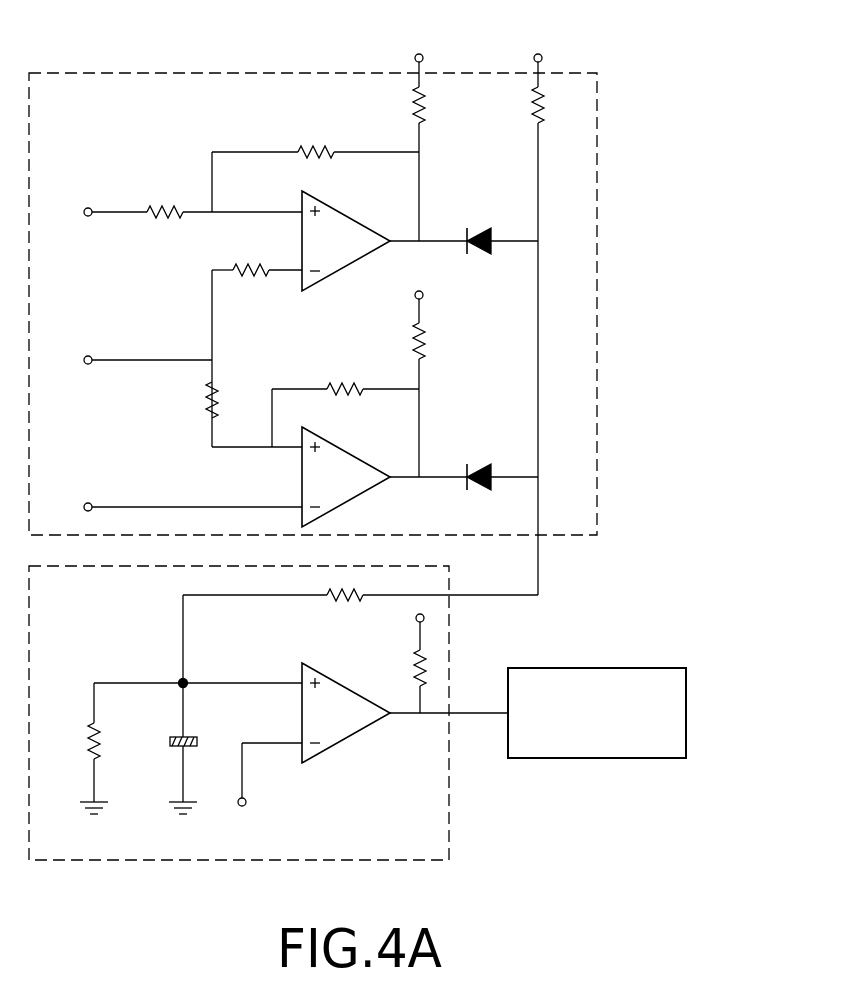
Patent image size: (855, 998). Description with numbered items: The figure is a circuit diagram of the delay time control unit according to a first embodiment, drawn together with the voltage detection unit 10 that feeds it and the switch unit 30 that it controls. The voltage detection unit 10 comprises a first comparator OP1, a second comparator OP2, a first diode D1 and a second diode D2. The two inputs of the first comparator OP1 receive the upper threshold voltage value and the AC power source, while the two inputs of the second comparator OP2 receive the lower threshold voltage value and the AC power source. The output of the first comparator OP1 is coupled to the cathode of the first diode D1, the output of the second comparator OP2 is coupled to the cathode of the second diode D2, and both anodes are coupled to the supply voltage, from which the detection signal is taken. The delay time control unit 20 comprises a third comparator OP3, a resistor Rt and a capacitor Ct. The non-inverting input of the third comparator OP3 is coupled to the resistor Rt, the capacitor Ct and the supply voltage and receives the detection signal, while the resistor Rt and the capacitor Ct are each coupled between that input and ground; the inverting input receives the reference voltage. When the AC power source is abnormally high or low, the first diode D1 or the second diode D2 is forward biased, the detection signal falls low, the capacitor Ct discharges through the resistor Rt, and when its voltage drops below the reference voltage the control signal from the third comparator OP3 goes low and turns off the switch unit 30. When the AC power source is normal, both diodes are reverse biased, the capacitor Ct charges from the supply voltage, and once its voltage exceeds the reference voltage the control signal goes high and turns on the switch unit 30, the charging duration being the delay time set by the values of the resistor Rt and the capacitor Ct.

The voltage detection unit 10 is at (592, 302).
The delay time control unit 20 is at (444, 818).
The switch unit 30 is at (598, 676).
The first comparator OP1 is at (349, 224).
The second comparator OP2 is at (349, 460).
The third comparator OP3 is at (343, 692).
The first diode D1 is at (482, 227).
The second diode D2 is at (482, 462).
The resistor Rt is at (79, 748).
The capacitor Ct is at (167, 772).